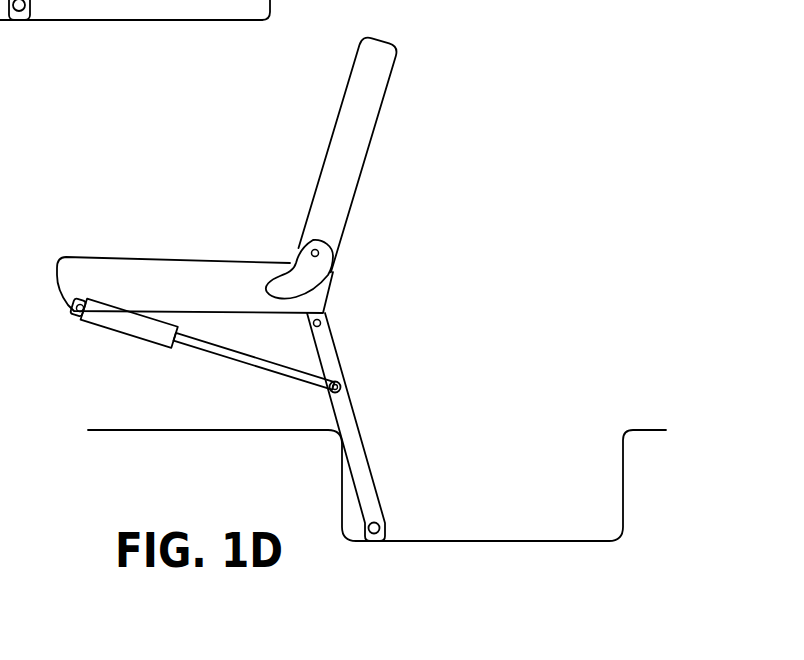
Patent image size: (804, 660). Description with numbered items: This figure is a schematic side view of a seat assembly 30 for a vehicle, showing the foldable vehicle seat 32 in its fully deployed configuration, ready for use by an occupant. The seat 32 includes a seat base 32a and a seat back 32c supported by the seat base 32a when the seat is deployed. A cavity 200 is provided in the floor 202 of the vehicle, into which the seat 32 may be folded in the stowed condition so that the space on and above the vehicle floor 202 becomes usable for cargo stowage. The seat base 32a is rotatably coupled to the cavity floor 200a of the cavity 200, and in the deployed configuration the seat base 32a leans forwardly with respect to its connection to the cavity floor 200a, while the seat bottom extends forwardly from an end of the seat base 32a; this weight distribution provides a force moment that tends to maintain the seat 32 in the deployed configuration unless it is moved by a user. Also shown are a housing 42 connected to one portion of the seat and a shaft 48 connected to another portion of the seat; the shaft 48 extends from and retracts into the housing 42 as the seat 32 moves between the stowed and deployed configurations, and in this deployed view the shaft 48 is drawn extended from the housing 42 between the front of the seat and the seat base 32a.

The seat assembly 30 is at (253, 278).
The foldable vehicle seat 32 is at (350, 122).
The seat base 32a is at (358, 460).
The seat back 32c is at (367, 168).
The housing 42 is at (158, 330).
The shaft 48 is at (275, 365).
The cavity 200 is at (540, 541).
The cavity floor 200a is at (468, 541).
The vehicle floor 202 is at (232, 431).